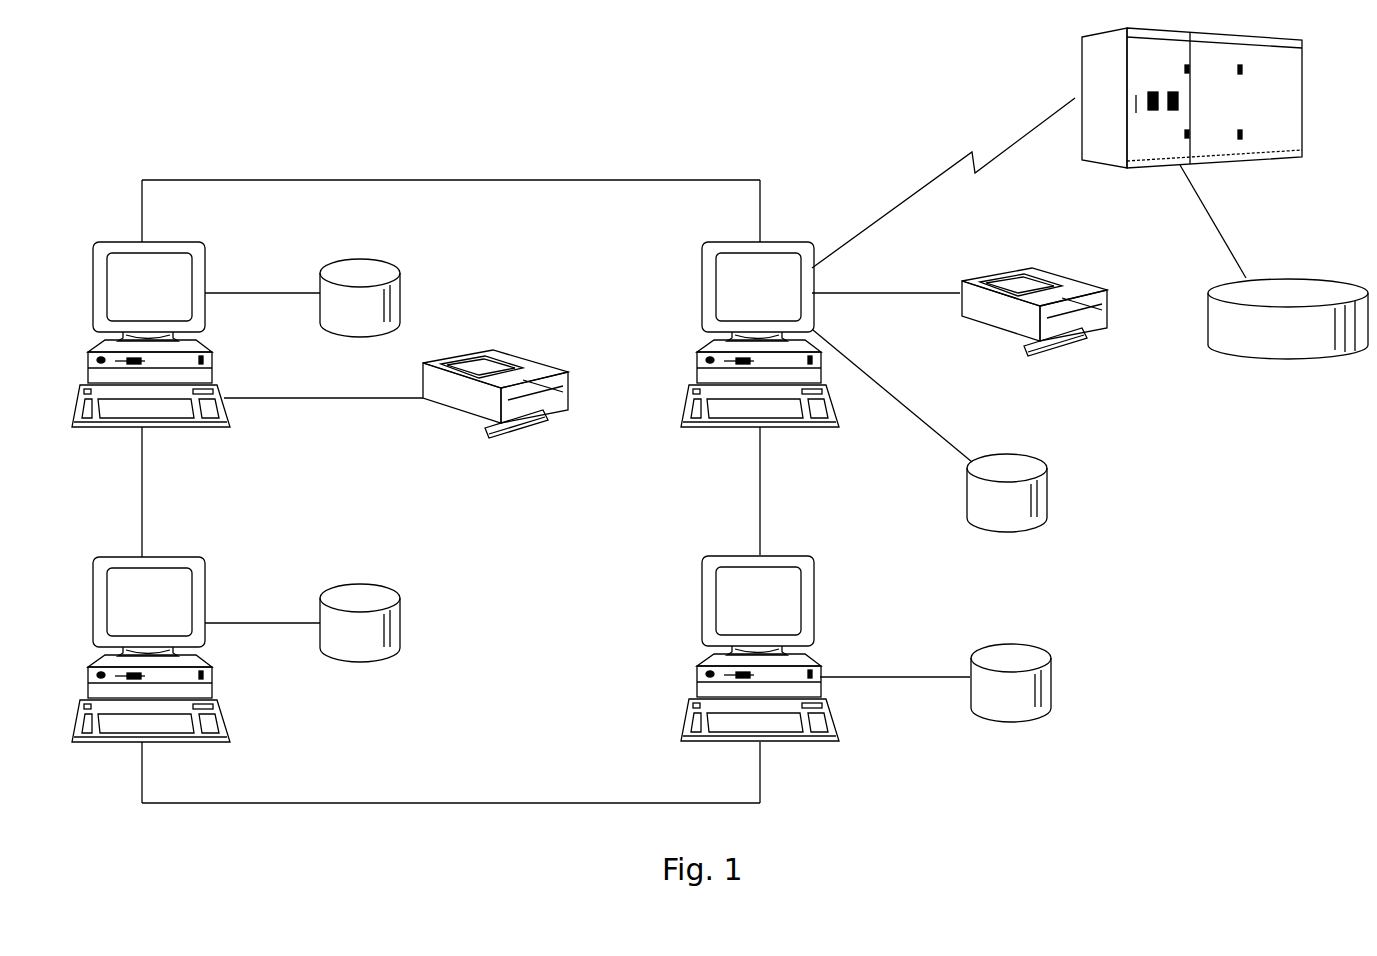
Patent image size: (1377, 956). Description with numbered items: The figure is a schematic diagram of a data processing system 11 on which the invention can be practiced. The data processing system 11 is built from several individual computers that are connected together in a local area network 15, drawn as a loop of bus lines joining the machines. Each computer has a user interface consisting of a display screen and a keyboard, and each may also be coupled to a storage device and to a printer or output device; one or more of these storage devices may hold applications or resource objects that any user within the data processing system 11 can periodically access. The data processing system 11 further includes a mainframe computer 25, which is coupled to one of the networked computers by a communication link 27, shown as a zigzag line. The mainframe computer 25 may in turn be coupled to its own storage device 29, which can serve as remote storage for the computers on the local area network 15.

The data processing system 11 is at (445, 155).
The local area network 15 is at (550, 803).
The mainframe computer 25 is at (1082, 75).
The communication link 27 is at (917, 191).
The storage device 29 is at (1255, 362).